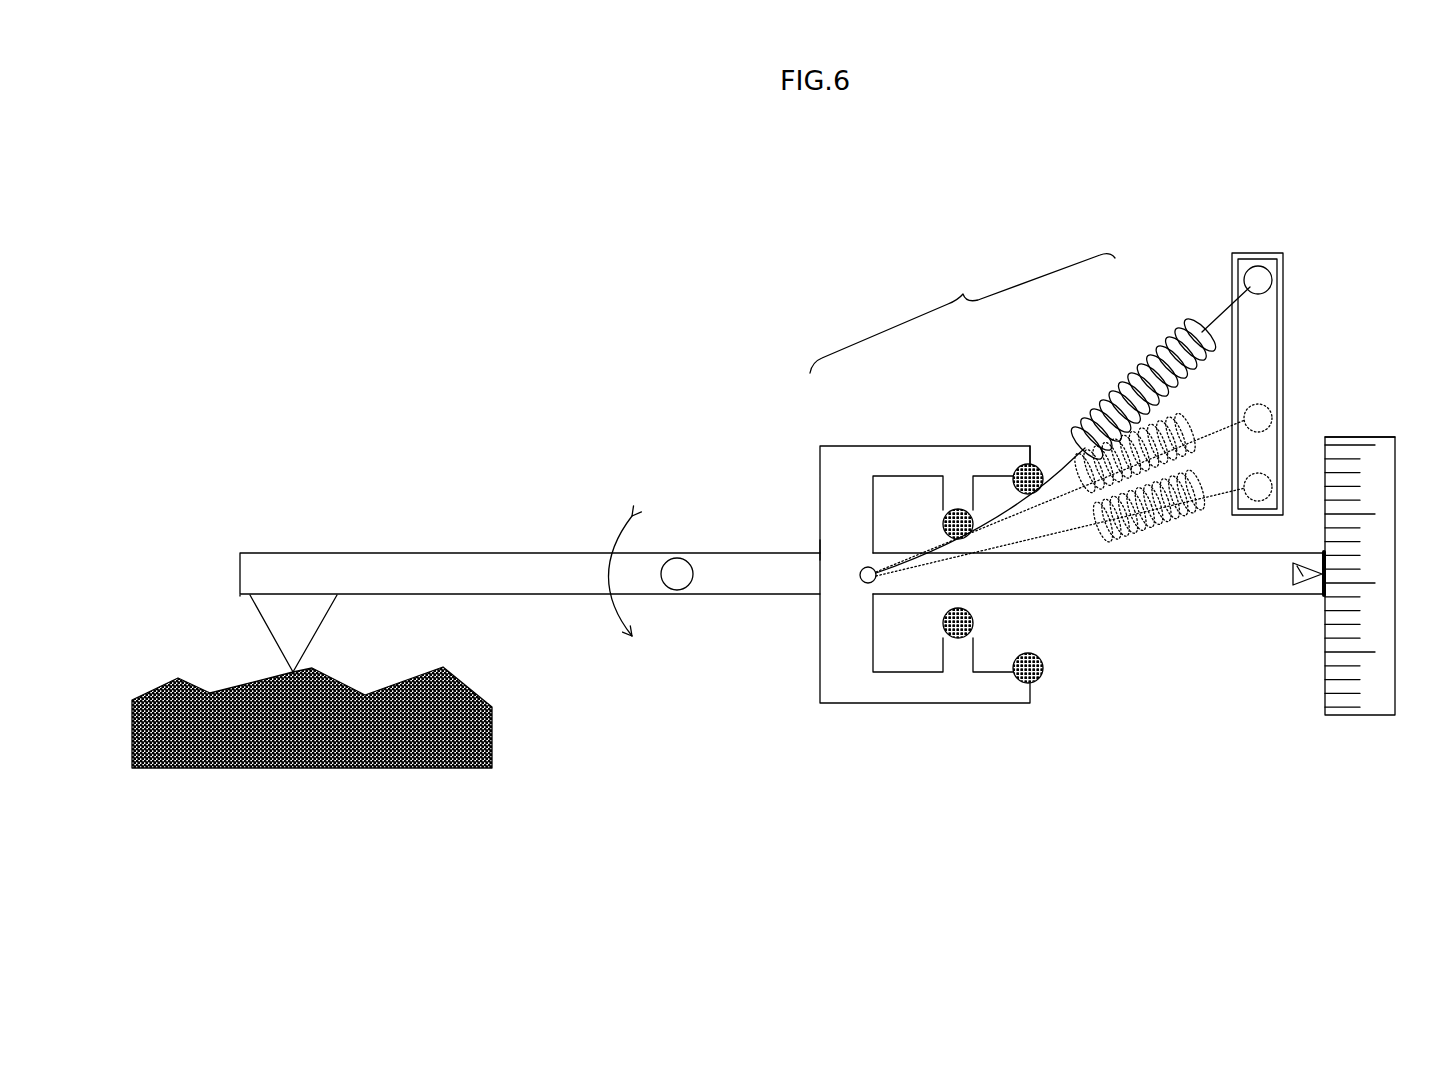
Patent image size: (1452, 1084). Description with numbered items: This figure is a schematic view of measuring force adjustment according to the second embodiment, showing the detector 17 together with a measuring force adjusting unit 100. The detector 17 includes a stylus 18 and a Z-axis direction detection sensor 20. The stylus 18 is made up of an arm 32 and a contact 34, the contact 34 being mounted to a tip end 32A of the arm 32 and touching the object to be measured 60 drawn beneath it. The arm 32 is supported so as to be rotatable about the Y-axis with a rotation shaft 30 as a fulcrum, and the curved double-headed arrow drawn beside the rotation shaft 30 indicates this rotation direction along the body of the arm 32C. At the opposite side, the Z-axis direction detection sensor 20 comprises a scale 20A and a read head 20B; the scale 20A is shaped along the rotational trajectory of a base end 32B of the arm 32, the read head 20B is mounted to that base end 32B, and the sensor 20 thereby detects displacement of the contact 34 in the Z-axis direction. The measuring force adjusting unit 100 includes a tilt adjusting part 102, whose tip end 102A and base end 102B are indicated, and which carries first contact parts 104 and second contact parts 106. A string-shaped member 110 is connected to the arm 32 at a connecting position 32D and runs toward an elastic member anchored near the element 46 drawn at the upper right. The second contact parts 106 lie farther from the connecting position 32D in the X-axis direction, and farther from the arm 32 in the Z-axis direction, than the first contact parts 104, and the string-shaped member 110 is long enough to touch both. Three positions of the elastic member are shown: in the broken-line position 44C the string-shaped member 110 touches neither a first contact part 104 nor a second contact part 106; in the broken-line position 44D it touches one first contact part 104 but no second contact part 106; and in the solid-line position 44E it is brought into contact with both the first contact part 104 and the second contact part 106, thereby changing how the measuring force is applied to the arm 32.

The detector 17 is at (614, 311).
The stylus 18 is at (231, 566).
The Z-axis direction detection sensor 20 is at (1401, 376).
The scale 20A is at (1368, 437).
The read head 20B is at (1299, 575).
The rotation shaft 30 is at (677, 557).
The arm 32 is at (412, 537).
The tip end of the arm 32A is at (237, 601).
The base end of the arm 32B is at (1317, 605).
The lever body 32C is at (519, 554).
The connecting position 32D is at (863, 582).
The contact 34 is at (314, 623).
The elastic member 44C is at (1202, 489).
The elastic member 44D is at (1192, 431).
The elastic member 44E is at (1133, 365).
The anchor pulley 46 is at (1258, 265).
The object to be measured 60 is at (313, 768).
The measuring force adjusting unit 100 is at (996, 478).
The tilt adjusting part 102 is at (902, 437).
The tip end of the tilt adjusting part 102A is at (1021, 439).
The base end of the tilt adjusting part 102B is at (812, 547).
The first contact parts 104 is at (944, 529).
The second contact parts 106 is at (1037, 464).
The string-shaped member 110 is at (1010, 510).